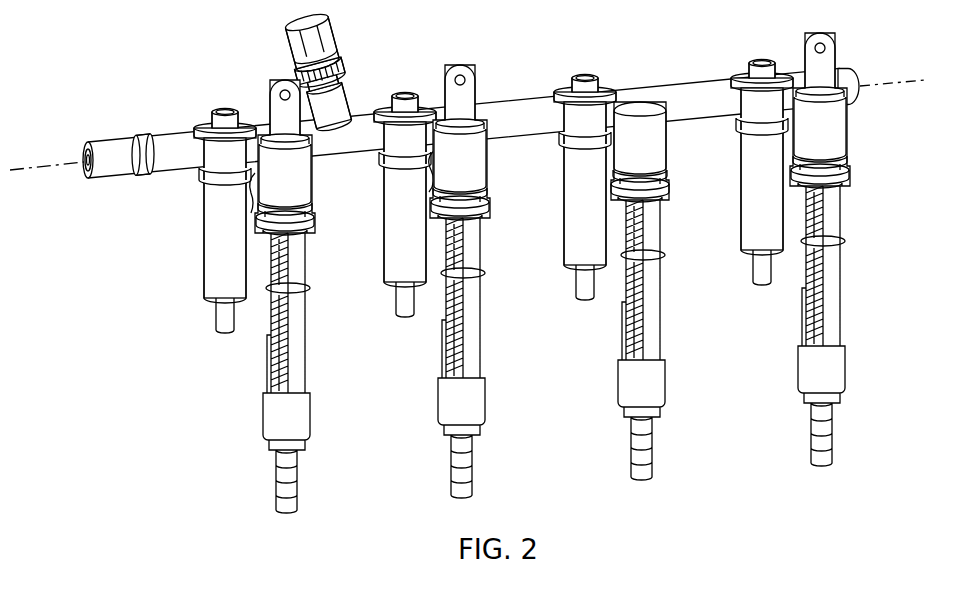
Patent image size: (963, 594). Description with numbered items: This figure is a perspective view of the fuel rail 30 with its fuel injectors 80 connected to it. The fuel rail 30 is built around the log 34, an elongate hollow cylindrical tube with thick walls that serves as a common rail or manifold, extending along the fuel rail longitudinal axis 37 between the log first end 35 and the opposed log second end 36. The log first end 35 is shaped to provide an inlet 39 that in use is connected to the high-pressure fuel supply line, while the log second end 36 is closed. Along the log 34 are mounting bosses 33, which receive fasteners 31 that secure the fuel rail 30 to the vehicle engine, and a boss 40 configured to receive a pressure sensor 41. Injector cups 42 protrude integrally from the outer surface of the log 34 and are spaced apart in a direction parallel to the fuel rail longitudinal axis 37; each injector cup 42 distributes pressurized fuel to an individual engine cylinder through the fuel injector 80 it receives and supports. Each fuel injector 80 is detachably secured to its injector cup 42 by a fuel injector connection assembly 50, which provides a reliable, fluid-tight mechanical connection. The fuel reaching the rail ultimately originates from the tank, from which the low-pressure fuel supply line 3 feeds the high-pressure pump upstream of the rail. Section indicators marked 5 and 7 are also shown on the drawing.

The low-pressure fuel supply line 3 is at (228, 213).
The section line 5- 5 is at (264, 99).
The section line 7- 7 is at (257, 210).
The fuel rail 30 is at (467, 102).
The fastener 31 is at (407, 95).
The mounting boss 33 is at (215, 203).
The log 34 is at (467, 106).
The log first end 35 is at (142, 128).
The log second end 36 is at (861, 97).
The fuel rail longitudinal axis 37 is at (892, 88).
The inlet 39 is at (114, 148).
The boss 40 is at (348, 96).
The pressure sensor 41 is at (333, 34).
The injector cup 42 is at (297, 192).
The fuel injector connection assembly 50 is at (318, 226).
The fuel injector 80 is at (293, 417).